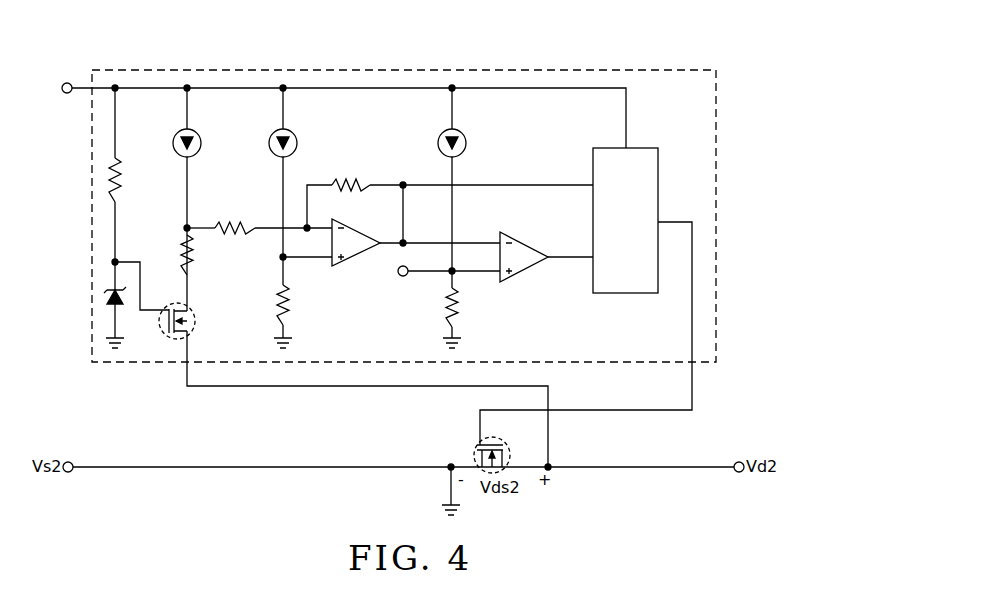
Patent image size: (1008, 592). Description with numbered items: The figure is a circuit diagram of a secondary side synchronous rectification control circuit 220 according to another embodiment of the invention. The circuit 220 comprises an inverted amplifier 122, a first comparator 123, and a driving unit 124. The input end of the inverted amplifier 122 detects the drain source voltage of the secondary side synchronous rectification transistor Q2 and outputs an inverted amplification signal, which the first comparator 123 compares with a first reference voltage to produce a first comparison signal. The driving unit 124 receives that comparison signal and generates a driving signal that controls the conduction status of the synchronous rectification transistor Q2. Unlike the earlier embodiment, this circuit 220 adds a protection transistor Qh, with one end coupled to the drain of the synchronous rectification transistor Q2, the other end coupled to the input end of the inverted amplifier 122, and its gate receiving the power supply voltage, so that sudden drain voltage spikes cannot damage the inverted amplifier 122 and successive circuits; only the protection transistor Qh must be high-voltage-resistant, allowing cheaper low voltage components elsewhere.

The secondary side synchronous rectification control circuit 220 is at (697, 66).
The inverted amplifier 122 is at (352, 266).
The first comparator 123 is at (508, 230).
The driving unit 124 is at (641, 148).
The protection transistor Qh is at (193, 308).
The secondary side synchronous rectification transistor Q2 is at (475, 449).